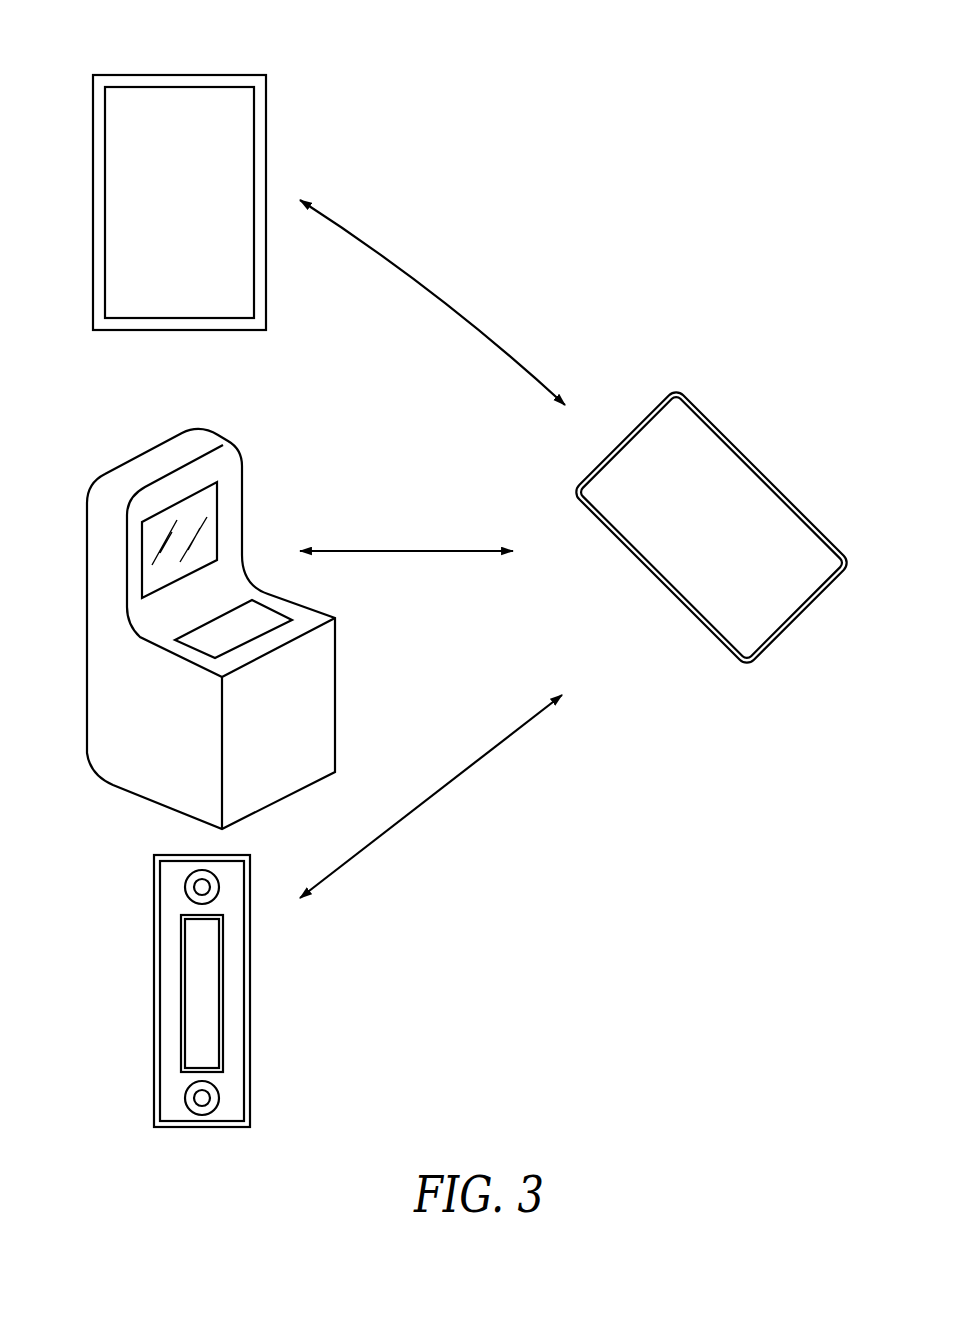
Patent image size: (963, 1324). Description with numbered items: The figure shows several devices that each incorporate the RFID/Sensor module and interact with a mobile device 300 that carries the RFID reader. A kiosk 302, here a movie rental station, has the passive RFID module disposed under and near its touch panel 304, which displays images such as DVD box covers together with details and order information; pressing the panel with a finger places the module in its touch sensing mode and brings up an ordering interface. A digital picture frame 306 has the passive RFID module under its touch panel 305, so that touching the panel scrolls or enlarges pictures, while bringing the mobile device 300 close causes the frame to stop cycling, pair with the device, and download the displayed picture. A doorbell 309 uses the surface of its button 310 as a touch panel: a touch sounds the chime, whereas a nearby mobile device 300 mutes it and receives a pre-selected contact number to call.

The mobile device 300 is at (749, 432).
The kiosk 302 is at (178, 629).
The touch panel 304 is at (180, 578).
The touch panel 305 is at (254, 120).
The digital picture frame 306 is at (168, 169).
The doorbell 309 is at (182, 988).
The button 310 is at (221, 992).